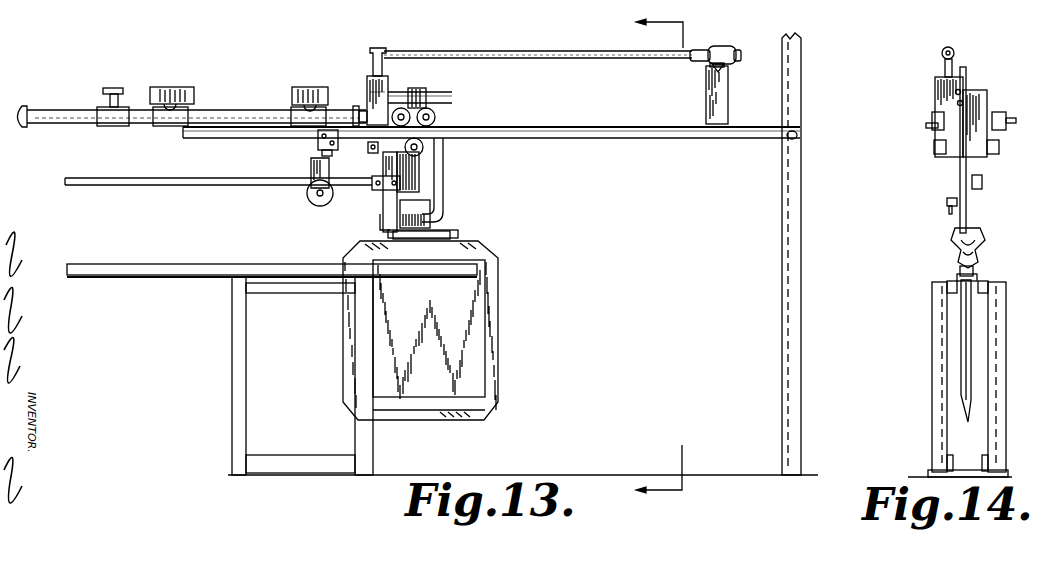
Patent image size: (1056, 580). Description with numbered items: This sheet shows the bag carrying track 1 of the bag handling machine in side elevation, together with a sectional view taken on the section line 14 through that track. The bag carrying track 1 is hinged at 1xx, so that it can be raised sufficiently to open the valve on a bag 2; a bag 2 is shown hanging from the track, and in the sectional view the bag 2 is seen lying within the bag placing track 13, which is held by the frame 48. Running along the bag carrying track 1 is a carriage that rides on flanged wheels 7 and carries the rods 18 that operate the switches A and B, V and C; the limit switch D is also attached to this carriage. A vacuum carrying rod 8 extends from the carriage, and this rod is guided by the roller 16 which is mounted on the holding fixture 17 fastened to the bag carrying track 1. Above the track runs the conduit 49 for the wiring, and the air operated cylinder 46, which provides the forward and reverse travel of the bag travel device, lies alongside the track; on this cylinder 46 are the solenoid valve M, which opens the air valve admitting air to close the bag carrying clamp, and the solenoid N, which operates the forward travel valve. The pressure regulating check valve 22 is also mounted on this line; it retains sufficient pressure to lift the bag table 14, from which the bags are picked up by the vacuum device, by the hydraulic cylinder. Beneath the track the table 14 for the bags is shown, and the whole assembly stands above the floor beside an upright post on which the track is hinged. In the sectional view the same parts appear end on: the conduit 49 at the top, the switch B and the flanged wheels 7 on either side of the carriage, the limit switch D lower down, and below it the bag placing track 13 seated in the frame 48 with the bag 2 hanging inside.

In FIG. 13, the bag carrying track 1 is at (491, 147).
In FIG. 14, the bag carrying track 1 is at (934, 133).
In FIG. 13, the hinge of bag carrying track 1xx is at (798, 135).
In FIG. 13, the bag 2 is at (420, 325).
In FIG. 14, the bag 2 is at (967, 345).
In FIG. 13, the flanged wheels 7 is at (437, 117).
In FIG. 14, the flanged wheels 7 is at (932, 120).
In FIG. 13, the vacuum carrying rod 8 is at (166, 187).
In FIG. 13, the bag placing track 13 is at (198, 263).
In FIG. 14, the bag placing track 13 is at (982, 274).
In FIG. 13, the table for bags 14 is at (672, 257).
In FIG. 13, the roller 16 is at (308, 199).
In FIG. 13, the holding fixture 17 is at (311, 131).
In FIG. 13, the rods 18 is at (426, 90).
In FIG. 13, the pressure regulating check valve 22 is at (113, 87).
In FIG. 13, the cylinder 46 is at (46, 108).
In FIG. 14, the frame 48 is at (933, 294).
In FIG. 13, the conduit 49 is at (528, 53).
In FIG. 14, the conduit 49 is at (942, 53).
In FIG. 13, the switch A is at (384, 120).
In FIG. 13, the switch B is at (389, 85).
In FIG. 14, the switch B is at (935, 86).
In FIG. 13, the switch C is at (708, 102).
In FIG. 13, the limit switch D is at (431, 212).
In FIG. 14, the limit switch D is at (952, 208).
In FIG. 13, the solenoid valve M is at (311, 86).
In FIG. 13, the solenoid N is at (172, 87).
In FIG. 13, the switch V is at (712, 72).